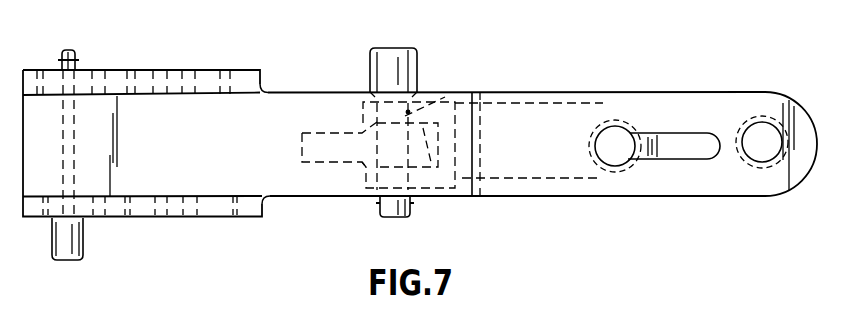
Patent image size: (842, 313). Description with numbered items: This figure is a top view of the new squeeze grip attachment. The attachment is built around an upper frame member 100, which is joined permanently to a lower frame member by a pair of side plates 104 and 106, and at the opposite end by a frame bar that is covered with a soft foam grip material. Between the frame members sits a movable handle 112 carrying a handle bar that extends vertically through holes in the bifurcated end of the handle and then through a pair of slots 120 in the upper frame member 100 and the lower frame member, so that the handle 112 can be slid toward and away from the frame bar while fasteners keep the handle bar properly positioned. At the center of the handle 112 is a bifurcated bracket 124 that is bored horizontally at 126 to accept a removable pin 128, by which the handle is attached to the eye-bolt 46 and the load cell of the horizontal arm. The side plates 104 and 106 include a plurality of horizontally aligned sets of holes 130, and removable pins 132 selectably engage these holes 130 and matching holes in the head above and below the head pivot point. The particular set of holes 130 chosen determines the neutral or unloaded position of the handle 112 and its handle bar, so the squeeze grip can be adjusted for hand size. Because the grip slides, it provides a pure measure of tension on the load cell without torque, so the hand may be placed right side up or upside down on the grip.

The upper frame member 100 is at (786, 105).
The side plate 104 is at (230, 72).
The side plate 106 is at (223, 210).
The movable handle 112 is at (551, 117).
The slot 120 is at (682, 133).
The bifurcated bracket 124 is at (450, 188).
The horizontal bore 126 is at (410, 112).
The removable pin 128 is at (417, 62).
The holes 130 is at (130, 73).
The removable pin 132 is at (70, 50).
The eye-bolt 46 is at (326, 162).